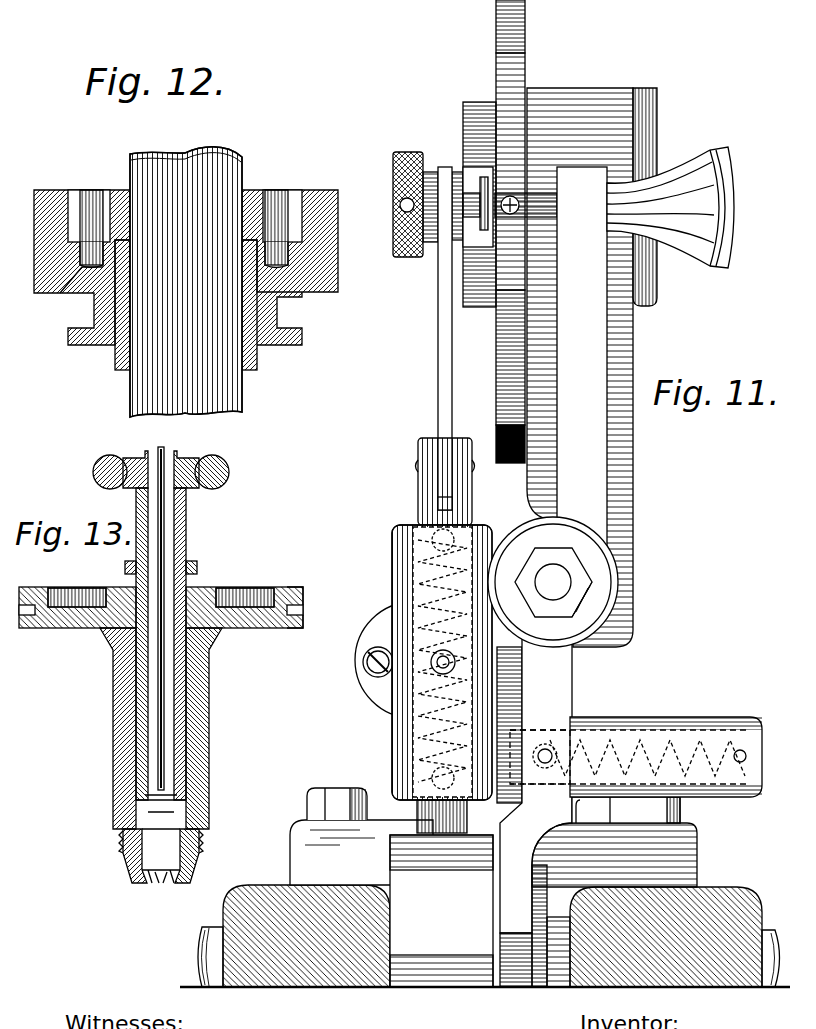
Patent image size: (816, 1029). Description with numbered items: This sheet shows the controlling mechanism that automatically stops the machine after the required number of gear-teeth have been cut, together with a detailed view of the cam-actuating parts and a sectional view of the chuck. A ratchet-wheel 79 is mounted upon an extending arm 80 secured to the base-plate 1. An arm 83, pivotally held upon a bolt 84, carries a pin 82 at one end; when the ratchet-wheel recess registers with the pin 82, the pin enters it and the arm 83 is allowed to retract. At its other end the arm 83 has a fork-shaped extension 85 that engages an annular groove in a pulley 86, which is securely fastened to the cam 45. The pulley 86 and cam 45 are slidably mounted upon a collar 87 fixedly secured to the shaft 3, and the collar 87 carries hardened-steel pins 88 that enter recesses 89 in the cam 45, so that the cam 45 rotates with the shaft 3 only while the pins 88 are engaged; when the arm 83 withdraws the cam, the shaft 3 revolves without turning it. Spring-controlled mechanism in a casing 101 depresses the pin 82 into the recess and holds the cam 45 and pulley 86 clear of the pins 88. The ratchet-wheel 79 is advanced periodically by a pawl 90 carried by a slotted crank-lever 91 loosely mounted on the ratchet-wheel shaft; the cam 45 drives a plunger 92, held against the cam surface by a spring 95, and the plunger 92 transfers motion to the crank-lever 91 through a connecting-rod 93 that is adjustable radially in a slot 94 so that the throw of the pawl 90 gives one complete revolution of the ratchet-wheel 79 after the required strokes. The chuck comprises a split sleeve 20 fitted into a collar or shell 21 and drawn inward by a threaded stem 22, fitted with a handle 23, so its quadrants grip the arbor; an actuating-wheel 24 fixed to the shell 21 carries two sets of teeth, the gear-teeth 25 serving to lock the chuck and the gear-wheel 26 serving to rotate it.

In FIG. 11, the base-plate 1 is at (317, 970).
In FIG. 12, the shaft 3 is at (215, 388).
In FIG. 11, the shaft 3 is at (222, 950).
In FIG. 13, the split sleeve 20 is at (149, 883).
In FIG. 13, the collar or shell 21 is at (184, 860).
In FIG. 13, the threaded stem 22 is at (164, 759).
In FIG. 13, the handle 23 is at (228, 477).
In FIG. 13, the actuating-wheel 24 is at (201, 600).
In FIG. 13, the set of gear-teeth 25 is at (298, 630).
In FIG. 13, the gear-wheel 26 is at (300, 586).
In FIG. 12, the cam 45 is at (328, 270).
In FIG. 11, the cam 45 is at (441, 911).
In FIG. 11, the ratchet-wheel 79 is at (497, 17).
In FIG. 11, the extending arm 80 is at (672, 832).
In FIG. 11, the pin 82 is at (540, 218).
In FIG. 11, the arm 83 is at (582, 363).
In FIG. 11, the bolt 84 is at (556, 581).
In FIG. 11, the fork-shaped extension 85 is at (536, 766).
In FIG. 12, the pulley 86 is at (272, 315).
In FIG. 11, the pulley 86 is at (513, 970).
In FIG. 12, the collar 87 is at (115, 372).
In FIG. 11, the collar 87 is at (557, 930).
In FIG. 12, the hardened-steel pins 88 is at (96, 200).
In FIG. 12, the recesses 89 is at (62, 290).
In FIG. 11, the pawl 90 is at (510, 84).
In FIG. 11, the slotted crank-lever 91 is at (472, 172).
In FIG. 11, the plunger 92 is at (430, 517).
In FIG. 11, the connecting-rod 93 is at (440, 362).
In FIG. 11, the slot 94 is at (480, 222).
In FIG. 11, the spring 95 is at (412, 753).
In FIG. 11, the casing 101 is at (680, 730).